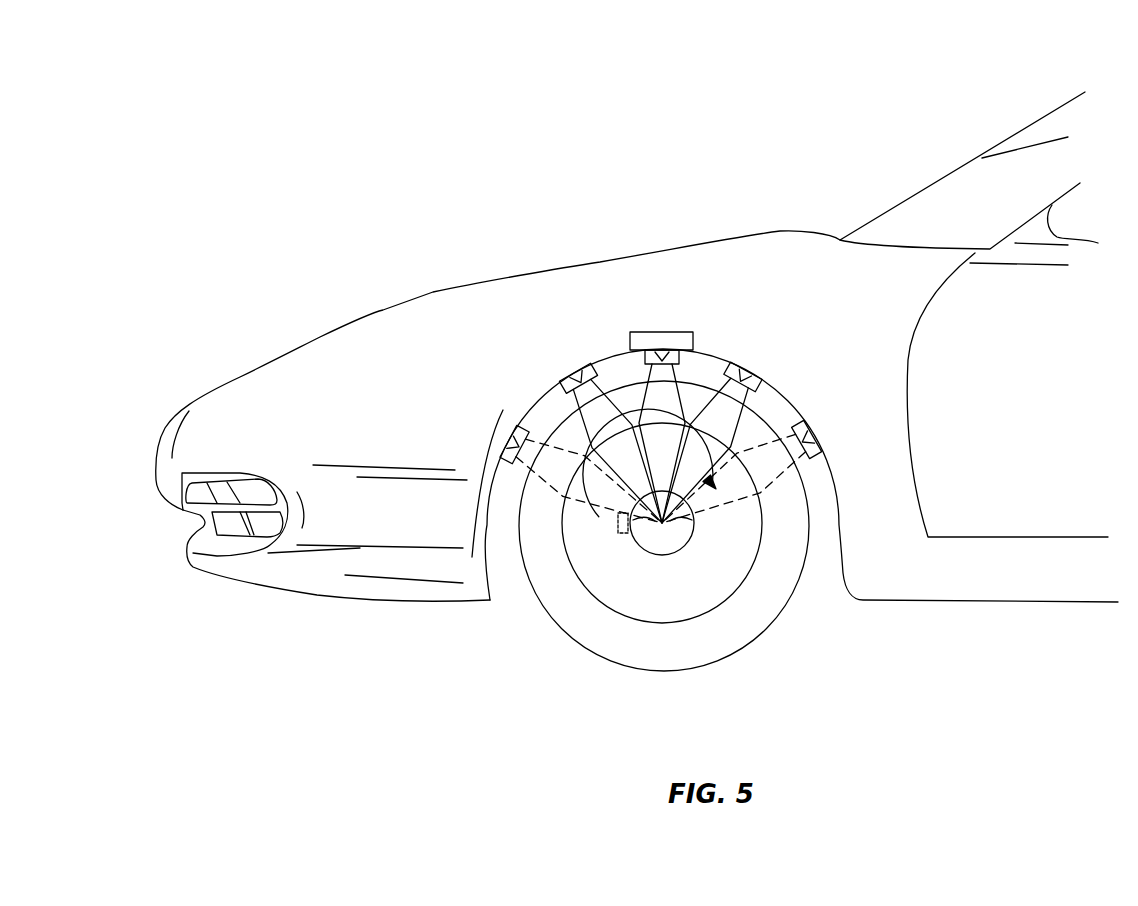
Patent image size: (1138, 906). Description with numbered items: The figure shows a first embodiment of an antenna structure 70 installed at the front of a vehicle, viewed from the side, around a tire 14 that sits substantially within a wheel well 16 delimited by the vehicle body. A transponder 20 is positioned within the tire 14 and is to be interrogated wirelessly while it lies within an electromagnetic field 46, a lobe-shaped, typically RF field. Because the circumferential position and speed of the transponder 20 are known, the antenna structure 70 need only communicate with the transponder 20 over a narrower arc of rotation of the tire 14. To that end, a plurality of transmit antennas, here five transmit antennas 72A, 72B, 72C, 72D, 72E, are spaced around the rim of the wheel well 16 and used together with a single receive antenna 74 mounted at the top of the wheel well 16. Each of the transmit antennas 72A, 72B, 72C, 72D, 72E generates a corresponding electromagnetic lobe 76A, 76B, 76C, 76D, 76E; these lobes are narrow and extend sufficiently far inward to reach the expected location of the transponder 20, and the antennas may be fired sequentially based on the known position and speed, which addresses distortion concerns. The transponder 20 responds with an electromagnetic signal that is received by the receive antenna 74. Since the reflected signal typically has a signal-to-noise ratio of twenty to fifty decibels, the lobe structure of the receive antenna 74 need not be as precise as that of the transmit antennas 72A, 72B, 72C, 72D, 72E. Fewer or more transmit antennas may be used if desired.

The tire 14 is at (733, 653).
The wheel well 16 is at (787, 405).
The transponder 20 is at (623, 537).
The electromagnetic field 46 is at (735, 542).
The antenna structure 70 is at (579, 271).
The transmit antenna 72A is at (503, 443).
The transmit antenna 72B is at (565, 377).
The transmit antenna 72C is at (680, 358).
The transmit antenna 72D is at (752, 384).
The transmit antenna 72E is at (820, 457).
The receive antenna 74 is at (663, 337).
The electromagnetic lobe 76A is at (578, 392).
The electromagnetic lobe 76B is at (556, 405).
The electromagnetic lobe 76C is at (637, 365).
The electromagnetic lobe 76D is at (745, 420).
The electromagnetic lobe 76E is at (782, 488).